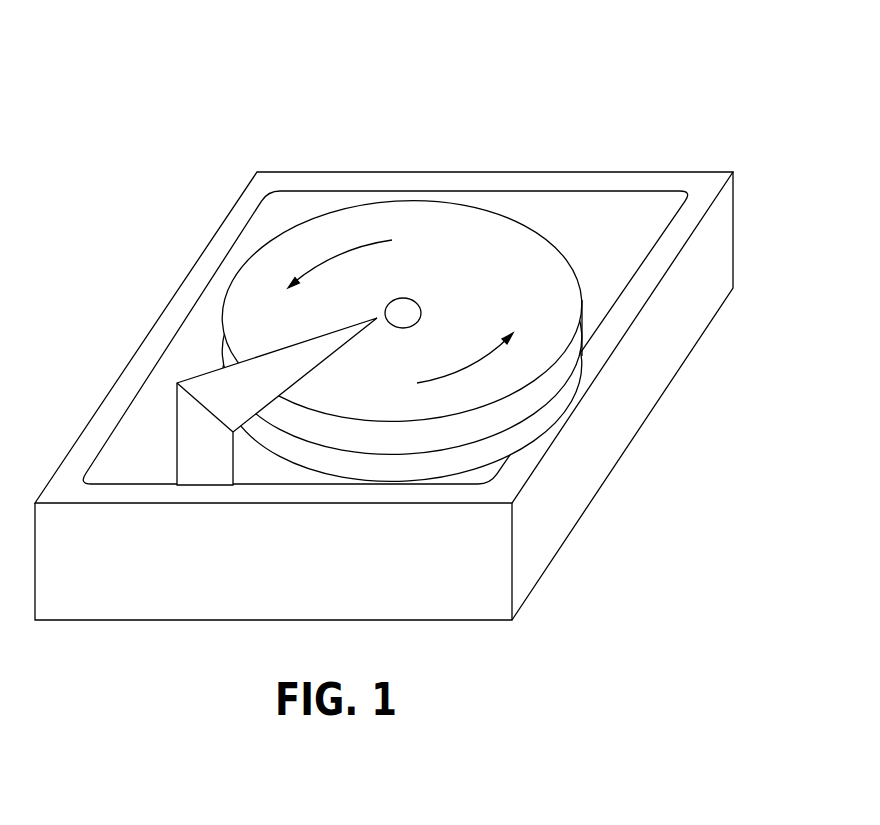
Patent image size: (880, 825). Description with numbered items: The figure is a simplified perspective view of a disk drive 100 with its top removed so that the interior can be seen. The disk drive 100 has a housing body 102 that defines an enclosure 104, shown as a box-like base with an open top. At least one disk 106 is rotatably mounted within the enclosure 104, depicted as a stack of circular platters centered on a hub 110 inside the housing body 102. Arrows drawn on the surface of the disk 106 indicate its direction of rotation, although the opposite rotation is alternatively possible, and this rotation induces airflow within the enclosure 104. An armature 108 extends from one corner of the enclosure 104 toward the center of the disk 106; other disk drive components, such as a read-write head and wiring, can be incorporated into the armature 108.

The disk drive 100 is at (384, 322).
The housing body 102 is at (228, 221).
The enclosure 104 is at (588, 213).
The disk 106 is at (582, 298).
The armature 108 is at (351, 340).
The spindle 110 is at (410, 313).